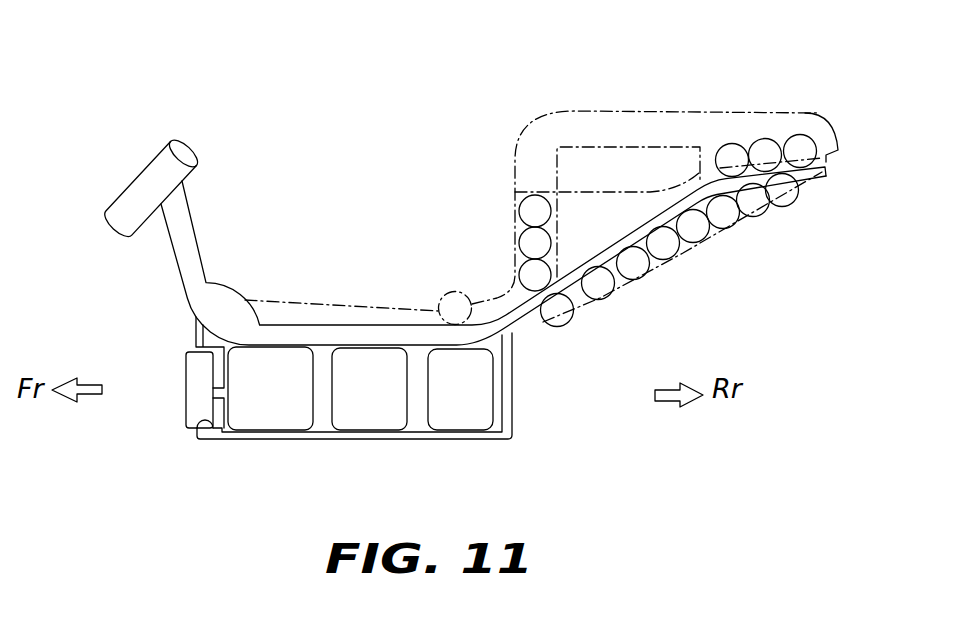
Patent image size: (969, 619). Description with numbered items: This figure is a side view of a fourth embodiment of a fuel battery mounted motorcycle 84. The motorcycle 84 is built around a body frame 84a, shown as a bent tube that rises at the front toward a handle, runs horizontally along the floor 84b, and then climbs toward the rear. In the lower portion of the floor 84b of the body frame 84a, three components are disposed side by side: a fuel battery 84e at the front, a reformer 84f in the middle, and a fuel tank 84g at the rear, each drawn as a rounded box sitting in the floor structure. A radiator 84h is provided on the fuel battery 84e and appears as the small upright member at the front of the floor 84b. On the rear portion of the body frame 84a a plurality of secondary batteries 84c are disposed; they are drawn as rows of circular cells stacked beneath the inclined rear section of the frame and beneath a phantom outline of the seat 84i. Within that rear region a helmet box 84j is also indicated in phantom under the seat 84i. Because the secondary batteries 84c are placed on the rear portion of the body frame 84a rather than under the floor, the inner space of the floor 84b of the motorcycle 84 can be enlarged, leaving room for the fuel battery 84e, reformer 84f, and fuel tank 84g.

The fuel battery mounted motorcycle 84 is at (248, 124).
The body frame 84a is at (201, 247).
The floor 84b is at (196, 428).
The secondary batteries 84c is at (760, 205).
The fuel battery 84e is at (267, 360).
The reformer 84f is at (363, 360).
The fuel tank 84g is at (477, 395).
The radiator 84h is at (195, 382).
The seat 84i is at (534, 133).
The helmet box 84j is at (620, 147).